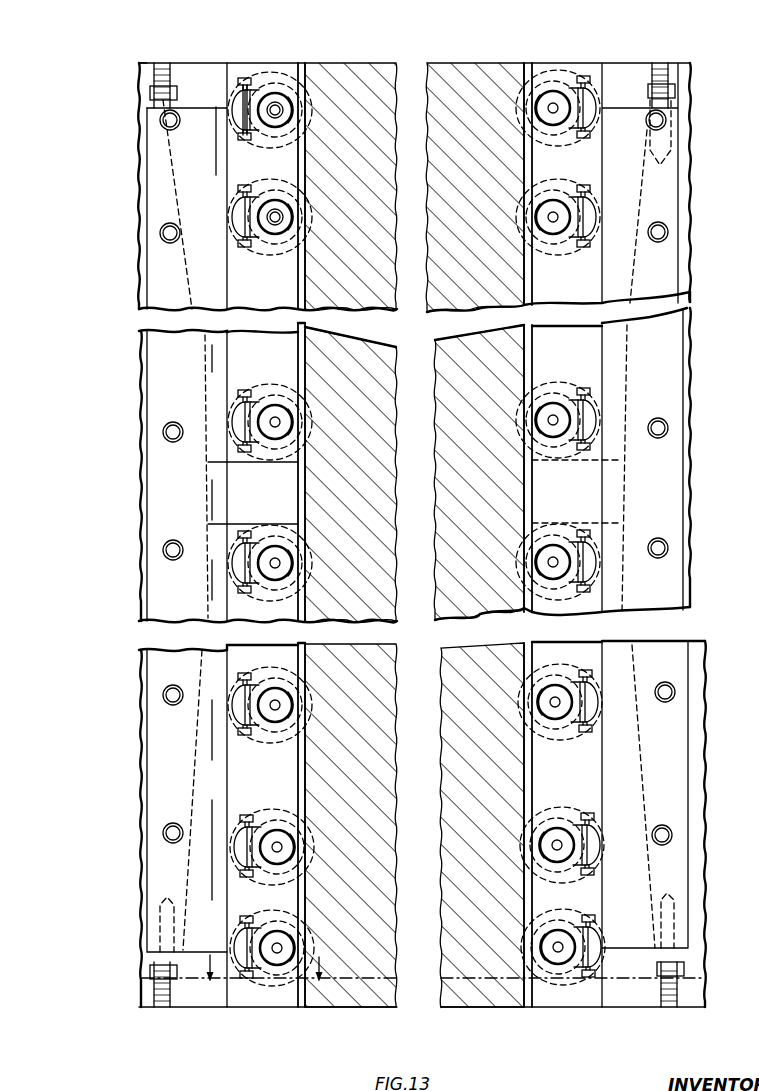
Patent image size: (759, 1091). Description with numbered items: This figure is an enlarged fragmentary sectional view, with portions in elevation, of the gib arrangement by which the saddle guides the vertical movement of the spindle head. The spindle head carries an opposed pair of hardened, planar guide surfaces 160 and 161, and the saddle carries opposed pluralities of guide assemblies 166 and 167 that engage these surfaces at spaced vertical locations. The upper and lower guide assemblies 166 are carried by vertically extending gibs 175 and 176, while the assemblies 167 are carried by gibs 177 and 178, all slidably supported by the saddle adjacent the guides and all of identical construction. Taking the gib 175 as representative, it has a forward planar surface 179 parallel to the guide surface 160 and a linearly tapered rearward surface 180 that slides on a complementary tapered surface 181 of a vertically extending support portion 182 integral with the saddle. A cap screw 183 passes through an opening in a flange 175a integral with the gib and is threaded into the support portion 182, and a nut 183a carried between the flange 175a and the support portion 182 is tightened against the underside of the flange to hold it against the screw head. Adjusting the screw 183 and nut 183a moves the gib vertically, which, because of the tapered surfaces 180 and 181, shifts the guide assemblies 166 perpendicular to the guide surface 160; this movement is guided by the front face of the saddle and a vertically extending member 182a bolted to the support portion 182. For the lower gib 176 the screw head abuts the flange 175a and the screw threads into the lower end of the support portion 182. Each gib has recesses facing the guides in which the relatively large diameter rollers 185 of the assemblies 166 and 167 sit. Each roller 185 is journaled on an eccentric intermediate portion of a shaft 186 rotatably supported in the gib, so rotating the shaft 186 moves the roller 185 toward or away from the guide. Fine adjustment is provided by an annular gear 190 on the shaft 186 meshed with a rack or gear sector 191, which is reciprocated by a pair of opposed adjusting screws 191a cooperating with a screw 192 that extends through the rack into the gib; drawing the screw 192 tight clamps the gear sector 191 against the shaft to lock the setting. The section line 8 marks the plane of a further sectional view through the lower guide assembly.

The section line 8- 8 is at (423, 972).
The guide surface 160 is at (306, 140).
The guide surface 161 is at (527, 140).
The guide assembly 166 is at (286, 93).
The guide assembly 167 is at (542, 90).
The gib 175 is at (208, 50).
The flange 175a is at (152, 78).
The gib 176 is at (198, 1008).
The gib 177 is at (633, 48).
The gib 178 is at (640, 998).
The forward planar surface 179 is at (298, 64).
The rearward surface 180 is at (145, 197).
The tapered surface 181 is at (165, 210).
The support portion 182 is at (140, 103).
The vertically extending member 182a is at (140, 296).
The cap screw 183 is at (162, 57).
The nut 183a is at (150, 90).
The roller 185 is at (298, 104).
The shaft 186 is at (283, 223).
The annular gear 190 is at (292, 118).
The rack 191 is at (242, 78).
The adjusting screws 191a is at (241, 76).
The screw 192 is at (232, 100).